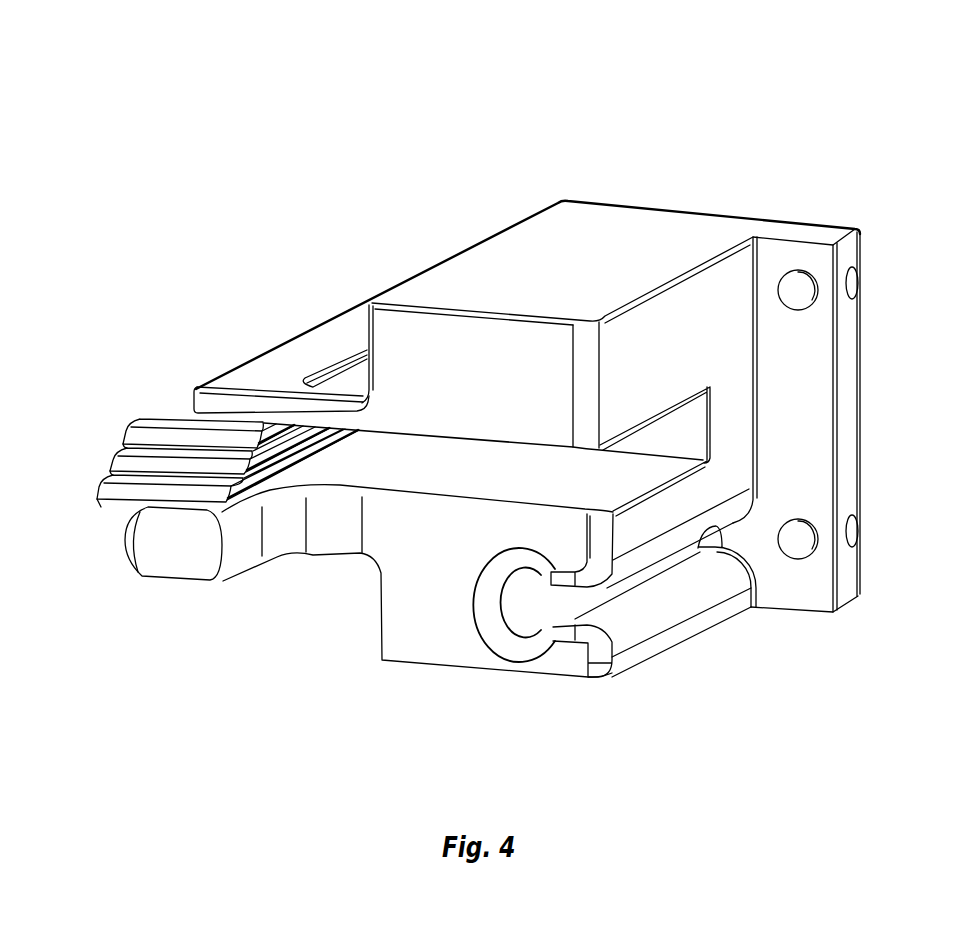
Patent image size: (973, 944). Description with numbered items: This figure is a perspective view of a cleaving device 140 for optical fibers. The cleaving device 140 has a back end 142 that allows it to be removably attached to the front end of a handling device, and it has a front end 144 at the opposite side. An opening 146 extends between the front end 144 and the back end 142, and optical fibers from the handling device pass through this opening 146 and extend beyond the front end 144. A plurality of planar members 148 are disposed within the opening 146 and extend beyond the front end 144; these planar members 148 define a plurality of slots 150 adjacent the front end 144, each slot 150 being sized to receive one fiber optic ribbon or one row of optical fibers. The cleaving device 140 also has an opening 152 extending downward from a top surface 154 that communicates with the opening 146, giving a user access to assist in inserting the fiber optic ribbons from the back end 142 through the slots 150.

The cleaving device 140 is at (873, 146).
The back end 142 is at (884, 467).
The front end 144 is at (122, 555).
The opening 146 is at (531, 490).
The planar members 148 is at (117, 505).
The slots 150 is at (103, 468).
The opening 152 is at (343, 379).
The top surface 154 is at (340, 323).